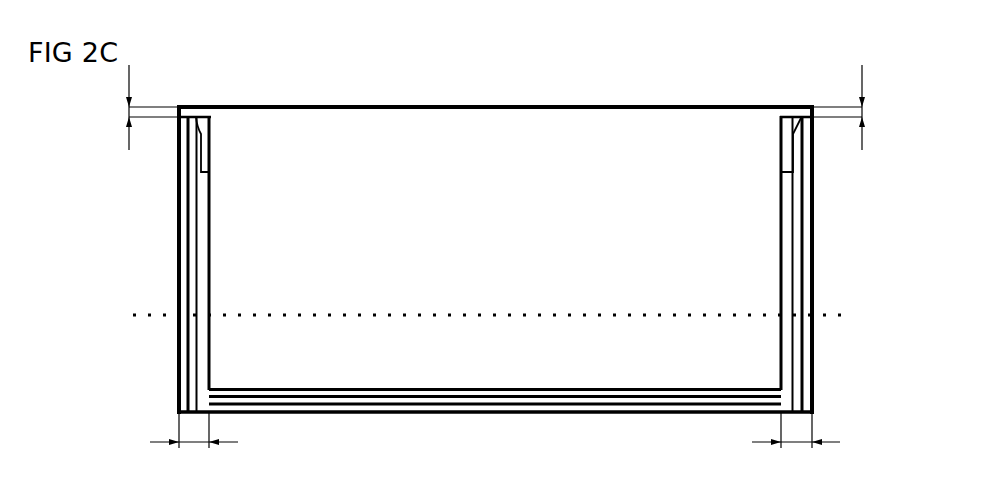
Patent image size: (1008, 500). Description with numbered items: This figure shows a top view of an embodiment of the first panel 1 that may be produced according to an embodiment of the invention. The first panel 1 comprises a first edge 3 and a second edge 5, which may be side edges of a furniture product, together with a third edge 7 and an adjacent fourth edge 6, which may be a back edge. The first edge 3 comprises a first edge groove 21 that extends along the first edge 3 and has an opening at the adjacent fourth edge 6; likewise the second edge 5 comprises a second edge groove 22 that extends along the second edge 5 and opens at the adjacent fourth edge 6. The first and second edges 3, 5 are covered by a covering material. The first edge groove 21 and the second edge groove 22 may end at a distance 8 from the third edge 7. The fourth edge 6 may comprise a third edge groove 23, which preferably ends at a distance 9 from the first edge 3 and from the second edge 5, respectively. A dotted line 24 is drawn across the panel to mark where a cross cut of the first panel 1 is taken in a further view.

The first panel 1 is at (588, 128).
The first edge 3 is at (178, 268).
The second edge 5 is at (812, 294).
The fourth edge 6 is at (540, 413).
The third edge 7 is at (465, 107).
The distance 8 is at (483, 107).
The distance 9 is at (495, 430).
The first edge groove 21 is at (202, 379).
The second edge groove 22 is at (788, 378).
The third edge groove 23 is at (468, 398).
The dotted line 24 is at (475, 317).